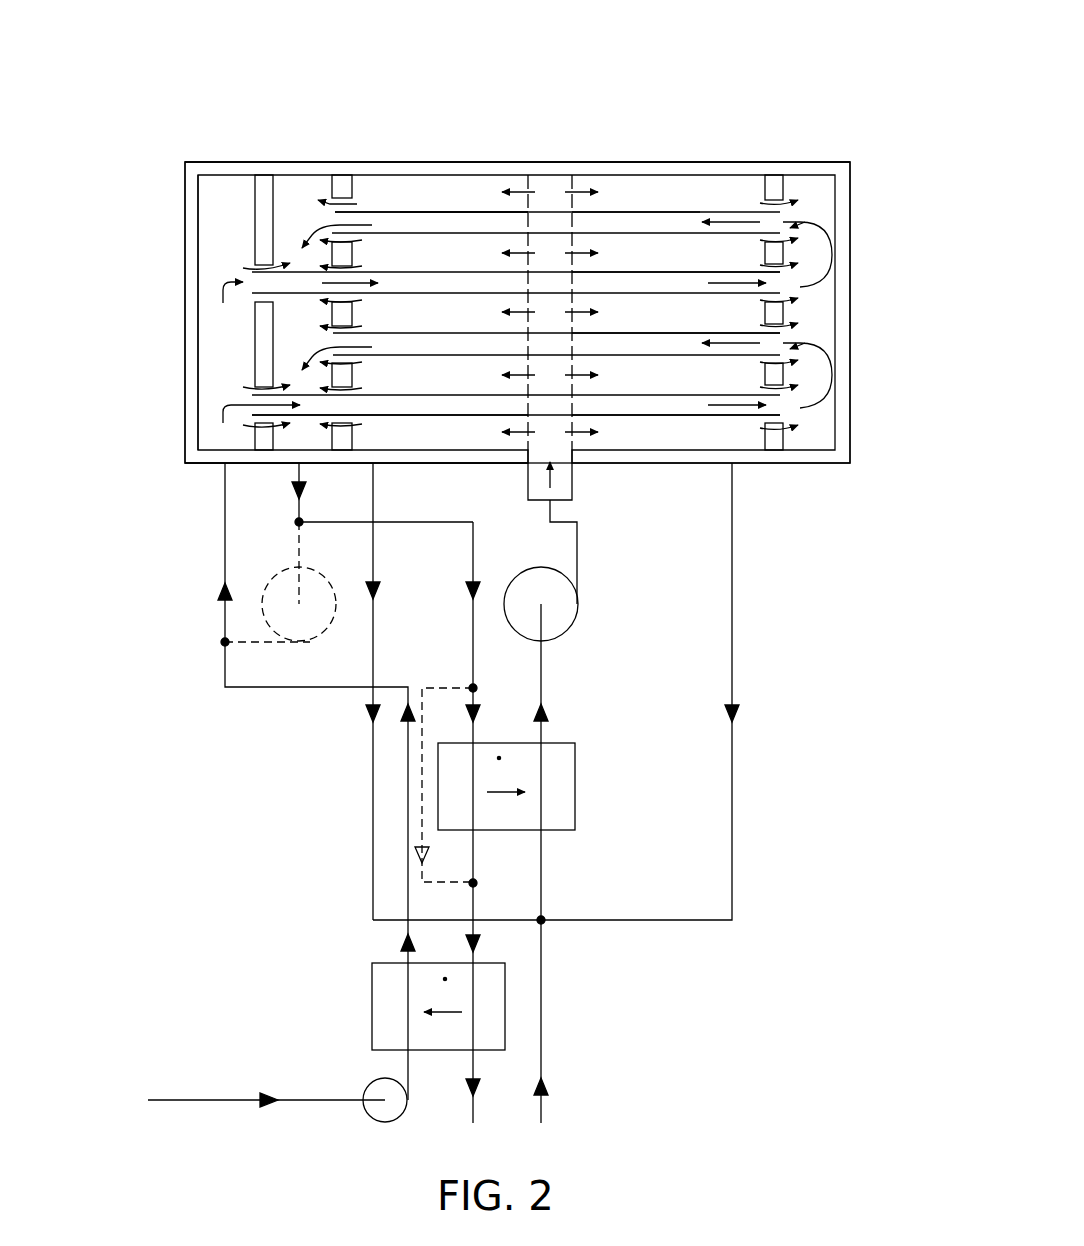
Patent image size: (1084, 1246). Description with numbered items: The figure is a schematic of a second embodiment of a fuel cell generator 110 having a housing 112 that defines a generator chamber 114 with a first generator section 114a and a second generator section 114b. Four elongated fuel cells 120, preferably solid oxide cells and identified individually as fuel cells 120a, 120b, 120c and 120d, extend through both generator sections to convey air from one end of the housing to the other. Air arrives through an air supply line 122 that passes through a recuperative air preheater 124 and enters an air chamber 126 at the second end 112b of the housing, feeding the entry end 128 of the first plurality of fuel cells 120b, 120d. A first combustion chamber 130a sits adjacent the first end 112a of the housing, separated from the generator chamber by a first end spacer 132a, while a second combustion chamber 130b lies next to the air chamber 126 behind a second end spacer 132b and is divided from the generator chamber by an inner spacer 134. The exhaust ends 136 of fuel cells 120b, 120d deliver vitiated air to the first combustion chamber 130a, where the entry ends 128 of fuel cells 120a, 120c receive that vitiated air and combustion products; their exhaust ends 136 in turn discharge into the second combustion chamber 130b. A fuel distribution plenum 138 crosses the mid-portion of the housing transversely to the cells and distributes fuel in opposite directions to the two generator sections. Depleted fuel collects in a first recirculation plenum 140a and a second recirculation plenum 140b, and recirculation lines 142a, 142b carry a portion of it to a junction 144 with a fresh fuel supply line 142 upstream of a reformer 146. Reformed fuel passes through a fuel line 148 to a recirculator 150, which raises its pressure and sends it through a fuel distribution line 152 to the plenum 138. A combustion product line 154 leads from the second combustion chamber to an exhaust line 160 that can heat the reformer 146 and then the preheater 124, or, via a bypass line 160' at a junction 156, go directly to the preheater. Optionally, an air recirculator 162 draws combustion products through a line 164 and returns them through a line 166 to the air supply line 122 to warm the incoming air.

The fuel cell generator 110 is at (865, 102).
The housing 112 is at (852, 150).
The first end of the housing 112a is at (848, 173).
The second end of the housing 112b is at (188, 432).
The generator chamber 114 is at (426, 182).
The first generator section 114a is at (673, 186).
The second generator section 114b is at (472, 210).
The elongated fuel cells 120 is at (452, 463).
The fuel cell 120a is at (480, 200).
The fuel cell 120b is at (642, 272).
The fuel cell 120c is at (660, 332).
The fuel cell 120d is at (660, 463).
The air supply line 122 is at (190, 1098).
The recuperative air preheater 124 is at (372, 1003).
The air chamber 126 is at (208, 342).
The entry end 128 is at (783, 222).
The first combustion chamber 130a is at (805, 183).
The second combustion chamber 130b is at (307, 183).
The first end spacer 132a is at (784, 433).
The second end spacer 132b is at (258, 222).
The inner spacer 134 is at (318, 316).
The exhaust end 136 is at (343, 218).
The fuel distribution plenum 138 is at (548, 182).
The first recirculation plenum 140a is at (723, 188).
The second recirculation plenum 140b is at (370, 182).
The fresh fuel supply line 142 is at (541, 1027).
The first recirculation line 142a is at (732, 772).
The second recirculation line 142b is at (373, 792).
The junction 144 is at (541, 922).
The reformer 146 is at (563, 796).
The fuel line 148 is at (541, 686).
The recirculator 150 is at (567, 615).
The fuel distribution line 152 is at (577, 550).
The combustion product line 154 is at (299, 505).
The junction 156 is at (473, 687).
The exhaust line 160 is at (545, 777).
The bypass line 160' is at (442, 756).
The air recirculator 162 is at (268, 585).
The line 164 is at (299, 566).
The line 166 is at (272, 641).